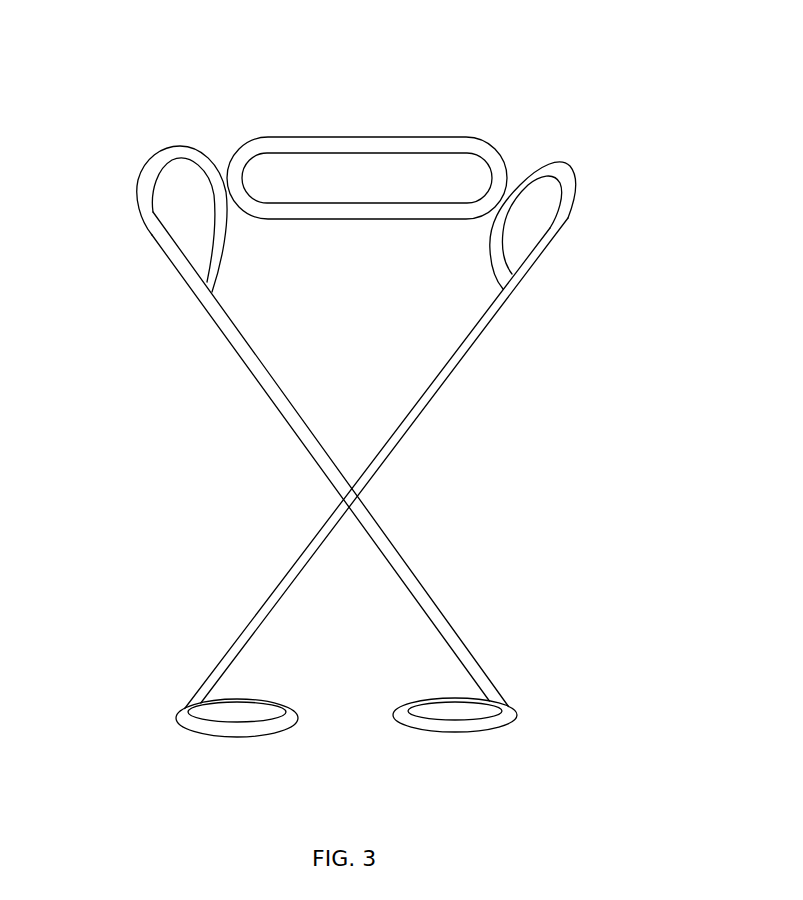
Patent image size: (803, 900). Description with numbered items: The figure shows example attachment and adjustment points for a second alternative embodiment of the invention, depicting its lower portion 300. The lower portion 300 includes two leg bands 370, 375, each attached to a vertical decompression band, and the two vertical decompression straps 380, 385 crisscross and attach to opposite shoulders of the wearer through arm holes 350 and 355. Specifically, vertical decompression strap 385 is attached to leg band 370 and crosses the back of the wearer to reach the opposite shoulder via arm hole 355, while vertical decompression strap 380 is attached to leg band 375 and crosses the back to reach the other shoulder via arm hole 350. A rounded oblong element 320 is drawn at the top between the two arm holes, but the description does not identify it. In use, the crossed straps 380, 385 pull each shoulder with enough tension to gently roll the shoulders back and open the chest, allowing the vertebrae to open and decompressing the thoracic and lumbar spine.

The lower portion 300 is at (525, 136).
The handle 320 is at (343, 146).
The arm hole 350 is at (174, 220).
The arm hole 355 is at (512, 255).
The leg band 370 is at (207, 730).
The leg band 375 is at (473, 732).
The vertical decompression strap 380 is at (285, 406).
The vertical decompression strap 385 is at (425, 395).